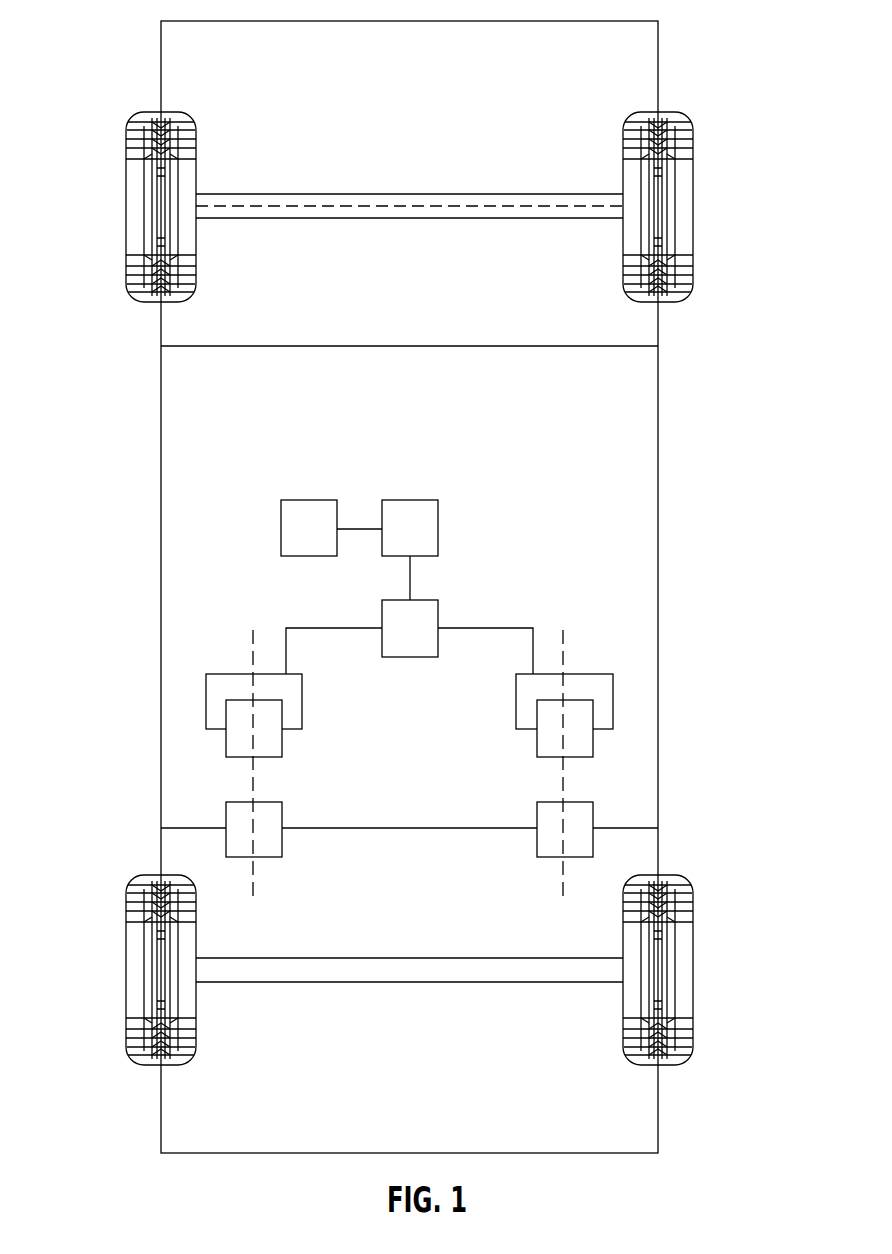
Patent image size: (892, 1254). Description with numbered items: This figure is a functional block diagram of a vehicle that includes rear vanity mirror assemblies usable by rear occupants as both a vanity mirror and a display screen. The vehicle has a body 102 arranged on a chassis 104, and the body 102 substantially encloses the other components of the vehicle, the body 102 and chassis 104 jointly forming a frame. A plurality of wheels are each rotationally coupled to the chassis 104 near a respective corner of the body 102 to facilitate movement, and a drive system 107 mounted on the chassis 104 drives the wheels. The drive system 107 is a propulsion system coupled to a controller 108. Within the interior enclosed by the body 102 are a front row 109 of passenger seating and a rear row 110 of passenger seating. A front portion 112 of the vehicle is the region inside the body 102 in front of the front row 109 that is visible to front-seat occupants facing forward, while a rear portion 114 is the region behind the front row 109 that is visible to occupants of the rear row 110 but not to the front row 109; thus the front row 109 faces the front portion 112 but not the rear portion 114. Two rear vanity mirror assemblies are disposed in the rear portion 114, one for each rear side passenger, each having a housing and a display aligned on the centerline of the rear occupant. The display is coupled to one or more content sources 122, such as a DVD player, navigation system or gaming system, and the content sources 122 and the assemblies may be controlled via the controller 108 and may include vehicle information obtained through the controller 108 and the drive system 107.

The body 102 is at (162, 537).
The chassis 104 is at (419, 185).
The drive system 107 is at (298, 500).
The controller 108 is at (423, 500).
The front row 109 is at (526, 345).
The rear row 110 is at (407, 828).
The front portion 112 is at (225, 324).
The rear portion 114 is at (248, 370).
The content sources 122 is at (423, 600).